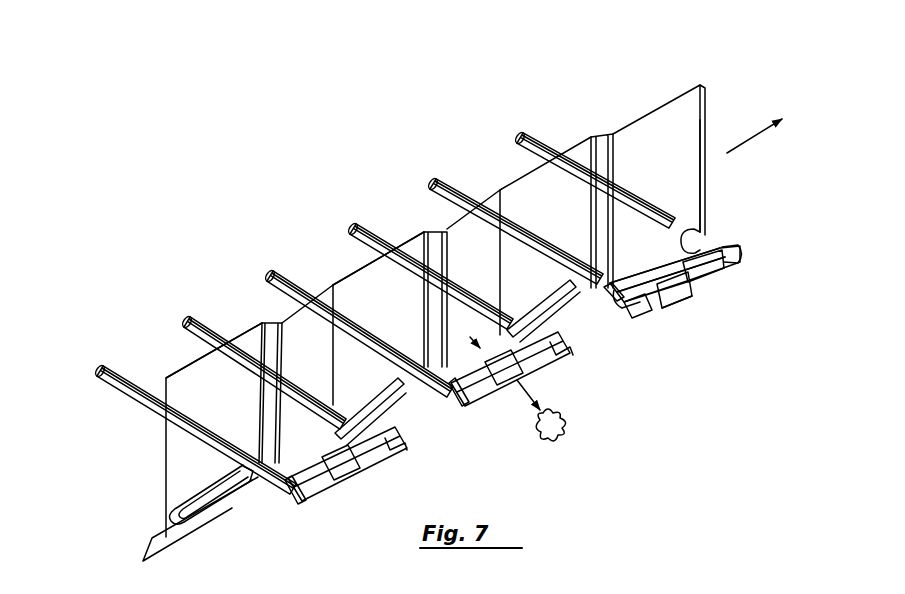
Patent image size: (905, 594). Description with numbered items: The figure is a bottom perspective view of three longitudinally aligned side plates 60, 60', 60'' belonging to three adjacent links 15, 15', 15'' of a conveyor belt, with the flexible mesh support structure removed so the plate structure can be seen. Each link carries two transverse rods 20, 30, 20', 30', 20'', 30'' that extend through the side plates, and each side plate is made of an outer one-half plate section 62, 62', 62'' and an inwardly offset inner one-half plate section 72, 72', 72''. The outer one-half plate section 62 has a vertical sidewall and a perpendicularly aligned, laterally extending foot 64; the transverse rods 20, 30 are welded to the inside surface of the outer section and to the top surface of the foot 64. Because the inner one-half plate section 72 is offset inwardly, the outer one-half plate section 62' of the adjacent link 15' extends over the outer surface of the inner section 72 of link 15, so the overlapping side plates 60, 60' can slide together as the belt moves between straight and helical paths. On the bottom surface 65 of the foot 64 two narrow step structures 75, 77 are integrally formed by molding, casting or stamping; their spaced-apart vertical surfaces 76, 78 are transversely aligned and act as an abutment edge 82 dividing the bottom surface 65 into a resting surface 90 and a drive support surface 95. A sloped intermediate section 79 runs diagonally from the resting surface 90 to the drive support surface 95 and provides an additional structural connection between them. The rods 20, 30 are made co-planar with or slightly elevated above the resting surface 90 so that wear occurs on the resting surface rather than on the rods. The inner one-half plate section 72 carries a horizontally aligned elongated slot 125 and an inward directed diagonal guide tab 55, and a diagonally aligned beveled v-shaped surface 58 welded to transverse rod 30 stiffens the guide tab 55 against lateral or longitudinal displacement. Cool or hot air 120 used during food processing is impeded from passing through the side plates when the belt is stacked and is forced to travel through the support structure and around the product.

The link 15 is at (575, 190).
The adjacent link 15' is at (348, 291).
The third adjacent link 15'' is at (213, 358).
The transverse rod 20 is at (241, 359).
The transverse rod 20' is at (406, 265).
The transverse rod 20'' is at (594, 143).
The transverse rod 30 is at (334, 324).
The transverse rod 30' is at (162, 427).
The transverse rod 30'' is at (487, 220).
The guide tab 55 is at (160, 543).
The beveled v-shaped surface 58 is at (413, 397).
The side plate 60 is at (659, 146).
The side plate 60' is at (371, 222).
The side plate 60'' is at (178, 350).
The outer one-half plate section 62 is at (713, 176).
The outer one-half plate section 62' is at (440, 262).
The outer one-half plate section 62'' is at (276, 345).
The foot 64 is at (742, 251).
The bottom surface 65 is at (720, 263).
The inner one-half plate section 72 is at (533, 165).
The inner one-half plate section 72' is at (359, 258).
The inner one-half plate section 72'' is at (183, 430).
The step structure 75 is at (712, 270).
The vertical surface 76 is at (706, 240).
The step structure 77 is at (645, 307).
The vertical surface 78 is at (620, 293).
The sloped intermediate section 79 is at (347, 470).
The abutment edge 82 is at (694, 278).
The resting surface 90 is at (300, 478).
The drive support surface 95 is at (657, 297).
The cool or hot air 120 is at (570, 438).
The elongated slot 125 is at (183, 508).